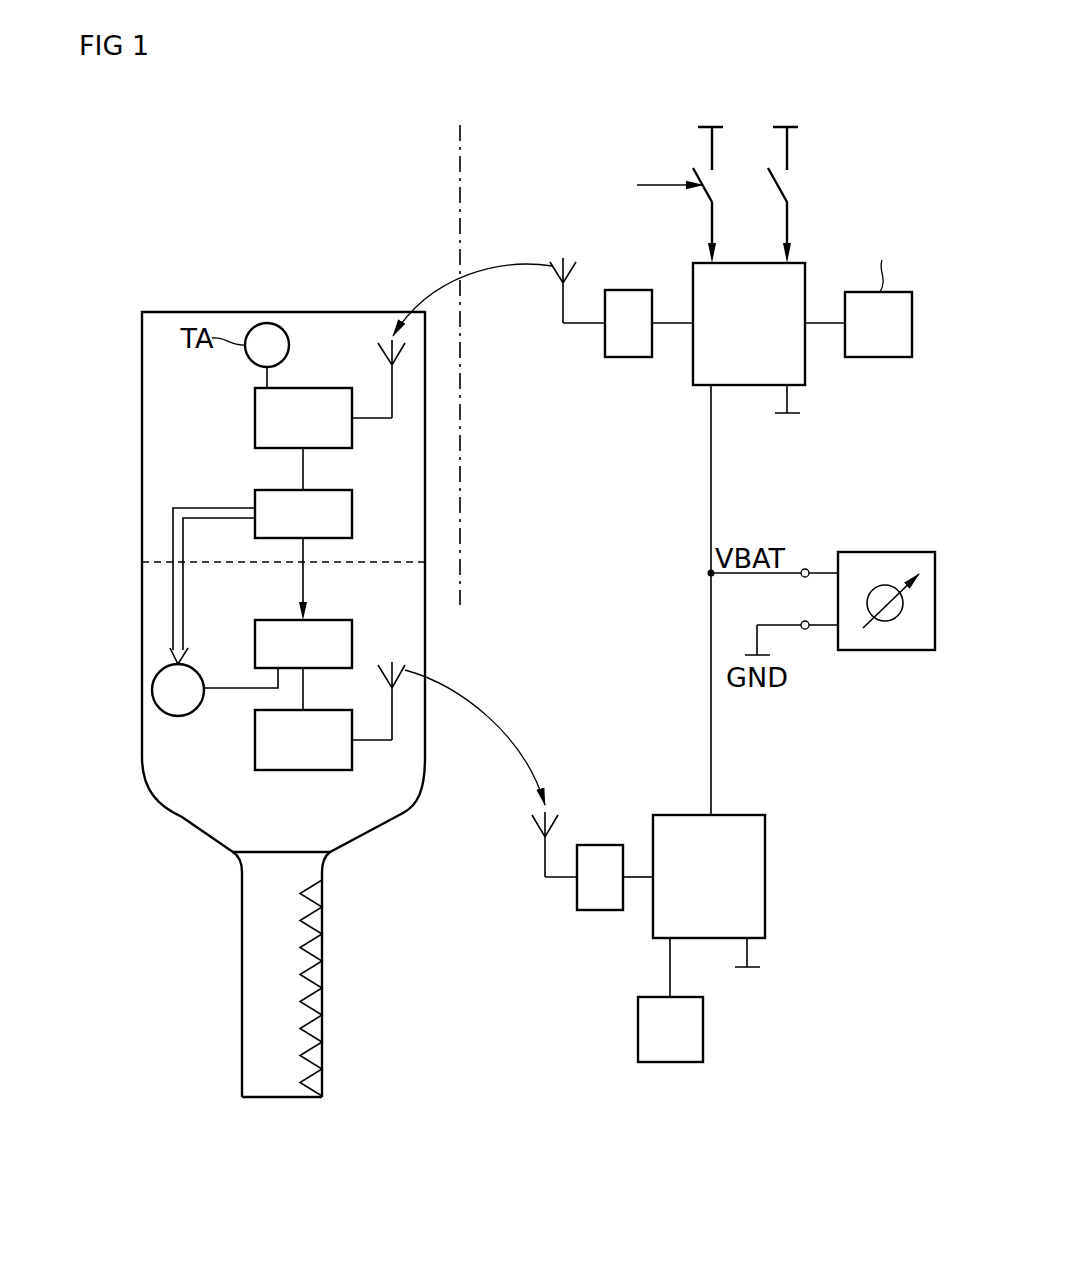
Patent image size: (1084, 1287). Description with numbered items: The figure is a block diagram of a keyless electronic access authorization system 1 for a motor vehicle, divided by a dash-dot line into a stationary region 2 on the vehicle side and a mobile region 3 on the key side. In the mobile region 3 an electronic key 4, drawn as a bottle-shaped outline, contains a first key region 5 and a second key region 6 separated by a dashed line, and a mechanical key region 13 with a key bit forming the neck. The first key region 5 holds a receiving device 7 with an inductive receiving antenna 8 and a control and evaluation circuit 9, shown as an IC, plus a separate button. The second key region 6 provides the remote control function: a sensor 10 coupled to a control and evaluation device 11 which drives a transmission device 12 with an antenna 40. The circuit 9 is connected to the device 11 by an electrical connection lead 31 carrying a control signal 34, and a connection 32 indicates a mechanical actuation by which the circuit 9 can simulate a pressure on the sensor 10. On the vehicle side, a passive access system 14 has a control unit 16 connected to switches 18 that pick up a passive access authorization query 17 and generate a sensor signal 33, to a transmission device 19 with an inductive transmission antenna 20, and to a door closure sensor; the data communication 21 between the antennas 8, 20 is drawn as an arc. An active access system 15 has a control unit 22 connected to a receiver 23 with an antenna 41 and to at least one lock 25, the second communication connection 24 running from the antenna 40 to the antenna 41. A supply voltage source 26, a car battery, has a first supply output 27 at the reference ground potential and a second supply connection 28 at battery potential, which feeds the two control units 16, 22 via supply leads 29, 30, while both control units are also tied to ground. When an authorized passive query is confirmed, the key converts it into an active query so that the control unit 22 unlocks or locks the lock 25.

The access authorization system 1 is at (509, 84).
The stationary region 2 is at (757, 87).
The mobile region 3 is at (258, 280).
The electronic key 4 is at (126, 525).
The first key region 5 is at (148, 437).
The second key region 6 is at (148, 747).
The receiving device 7 is at (254, 414).
The receiving antenna 8 is at (382, 356).
The control and evaluation circuit 9 is at (355, 513).
The sensor 10 is at (178, 716).
The control and evaluation device 11 is at (353, 645).
The transmission device 12 is at (300, 770).
The mechanical key region 13 is at (292, 1092).
The passive electronic access authorization system 14 is at (856, 202).
The active electronic access authorization system 15 is at (796, 831).
The control unit 16 is at (750, 388).
The passive access authorization query 17 is at (661, 183).
The switches 18 is at (710, 192).
The transmission device 19 is at (628, 358).
The transmission antenna 20 is at (577, 273).
The data communication 21 is at (437, 278).
The control unit 22 is at (765, 878).
The receiver 23 is at (605, 845).
The communication connection 24 is at (508, 722).
The lock 25 is at (703, 1030).
The supply voltage source 26 is at (888, 552).
The first supply output 27 is at (808, 632).
The second supply connection 28 is at (808, 568).
The supply lead 29 is at (710, 480).
The supply lead 30 is at (710, 705).
The electrical connection lead 31 is at (303, 578).
The connection 32 is at (186, 657).
The sensor signal 33 is at (717, 253).
The control signal 34 is at (298, 610).
The antenna 40 is at (378, 680).
The antenna 41 is at (540, 833).